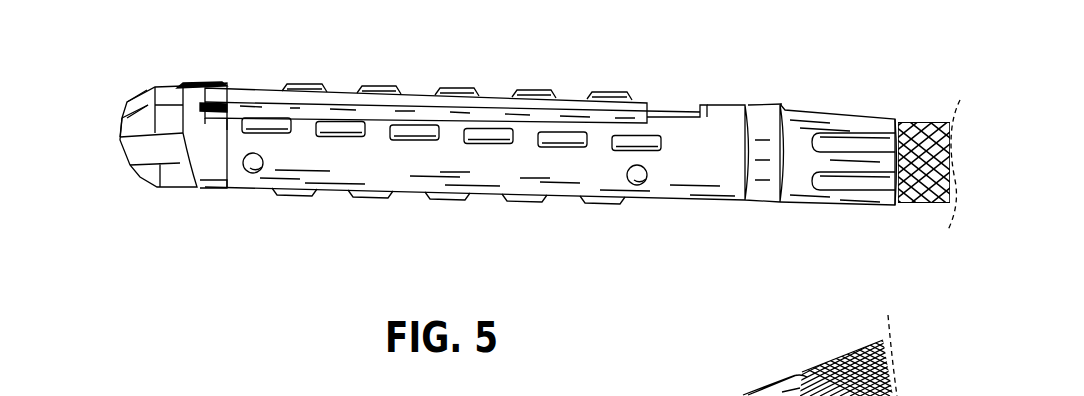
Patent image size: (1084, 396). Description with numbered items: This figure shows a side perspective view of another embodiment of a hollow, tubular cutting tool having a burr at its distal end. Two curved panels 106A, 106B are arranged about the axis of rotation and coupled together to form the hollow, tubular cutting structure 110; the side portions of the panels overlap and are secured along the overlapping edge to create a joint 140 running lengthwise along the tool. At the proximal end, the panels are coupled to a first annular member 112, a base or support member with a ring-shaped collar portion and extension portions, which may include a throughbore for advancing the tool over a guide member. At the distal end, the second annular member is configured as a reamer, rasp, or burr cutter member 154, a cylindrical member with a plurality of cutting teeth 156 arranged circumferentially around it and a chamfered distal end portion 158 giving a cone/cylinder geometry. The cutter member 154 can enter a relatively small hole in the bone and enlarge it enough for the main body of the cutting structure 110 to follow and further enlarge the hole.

The curved panel 106A is at (378, 88).
The curved panel 106B is at (385, 172).
The cutting structure 110 is at (446, 81).
The first annular member 112 is at (735, 102).
The joint 140 is at (502, 110).
The cutter member 154 is at (140, 118).
The cutting teeth 156 is at (197, 86).
The chamfered distal end portion 158 is at (144, 84).